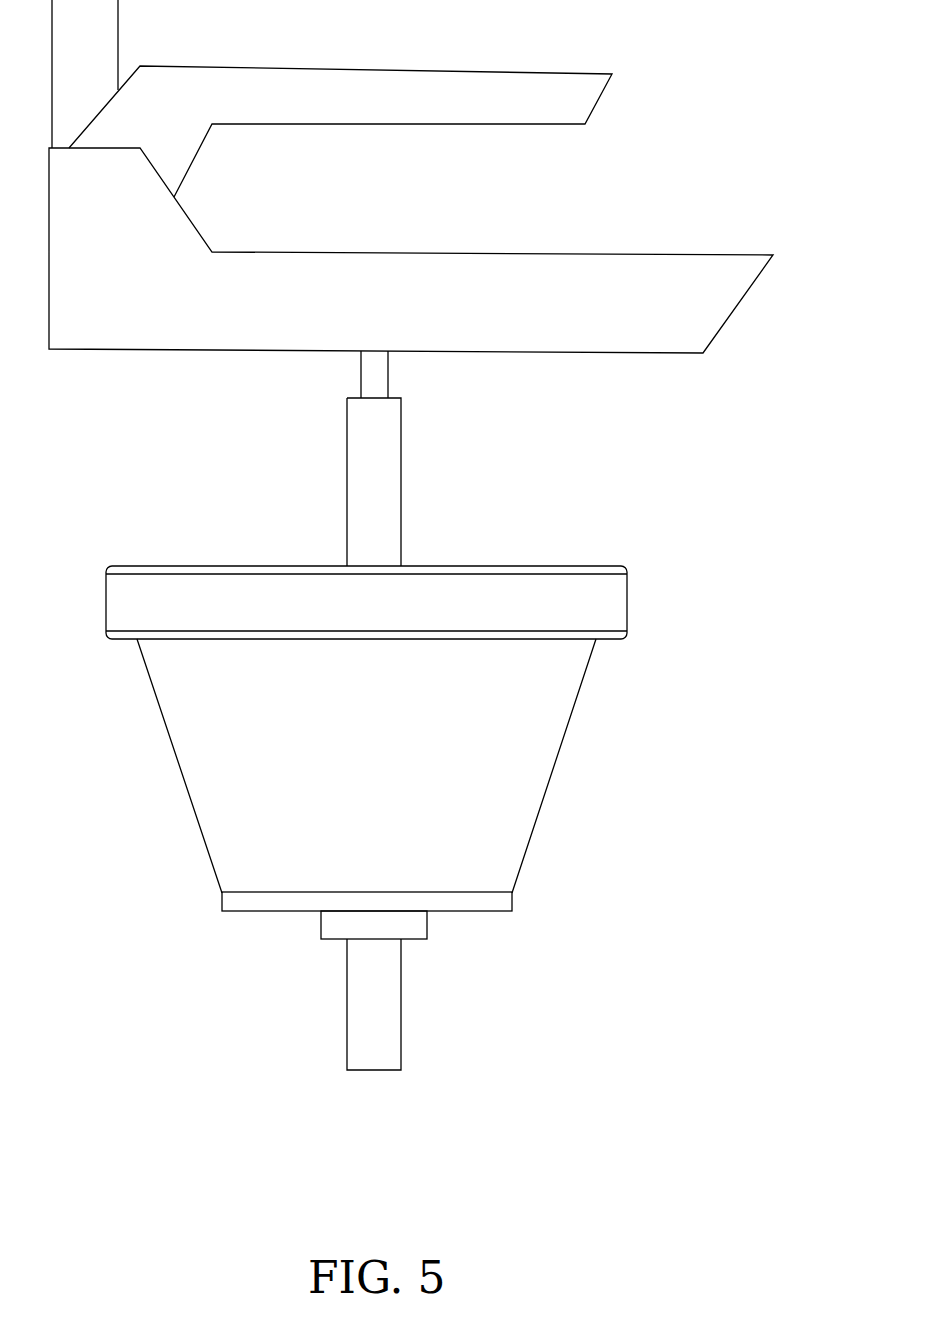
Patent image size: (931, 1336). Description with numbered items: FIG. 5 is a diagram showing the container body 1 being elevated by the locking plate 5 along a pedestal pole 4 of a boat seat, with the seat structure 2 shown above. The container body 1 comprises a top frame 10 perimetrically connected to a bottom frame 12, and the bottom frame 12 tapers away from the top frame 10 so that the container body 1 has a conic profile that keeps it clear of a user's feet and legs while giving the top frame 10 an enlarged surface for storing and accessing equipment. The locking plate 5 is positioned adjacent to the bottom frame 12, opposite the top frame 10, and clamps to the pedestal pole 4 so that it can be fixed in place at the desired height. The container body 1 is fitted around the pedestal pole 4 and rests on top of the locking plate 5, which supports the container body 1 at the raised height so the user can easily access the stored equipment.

The container body 1 is at (407, 818).
The tool holder arm 2 is at (190, 472).
The pedestal pole 4 is at (412, 434).
The locking plate 5 is at (420, 928).
The top frame 10 is at (620, 608).
The bottom frame 12 is at (548, 756).